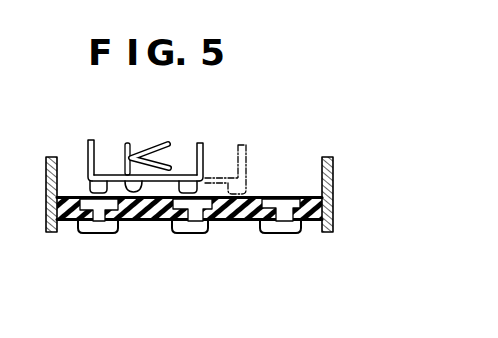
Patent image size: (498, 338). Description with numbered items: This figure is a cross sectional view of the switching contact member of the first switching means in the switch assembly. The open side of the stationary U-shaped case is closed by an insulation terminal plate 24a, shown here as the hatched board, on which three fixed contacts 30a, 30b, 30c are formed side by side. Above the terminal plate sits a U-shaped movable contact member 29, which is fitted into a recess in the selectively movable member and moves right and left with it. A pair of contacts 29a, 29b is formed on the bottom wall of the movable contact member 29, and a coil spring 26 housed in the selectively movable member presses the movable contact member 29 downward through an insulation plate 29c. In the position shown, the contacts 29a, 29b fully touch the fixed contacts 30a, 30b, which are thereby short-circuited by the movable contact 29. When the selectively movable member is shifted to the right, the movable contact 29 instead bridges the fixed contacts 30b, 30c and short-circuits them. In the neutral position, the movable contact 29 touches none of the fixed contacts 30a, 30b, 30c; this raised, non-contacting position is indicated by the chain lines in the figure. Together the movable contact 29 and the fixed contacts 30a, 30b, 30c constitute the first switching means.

The insulation terminal plate 24a is at (147, 220).
The coil spring 26 is at (154, 142).
The movable contact member 29 is at (166, 148).
The contact 29a is at (90, 187).
The contact 29b is at (203, 177).
The insulation plate 29c is at (112, 178).
The fixed contact 30a is at (98, 208).
The fixed contact 30b is at (190, 205).
The fixed contact 30c is at (279, 202).